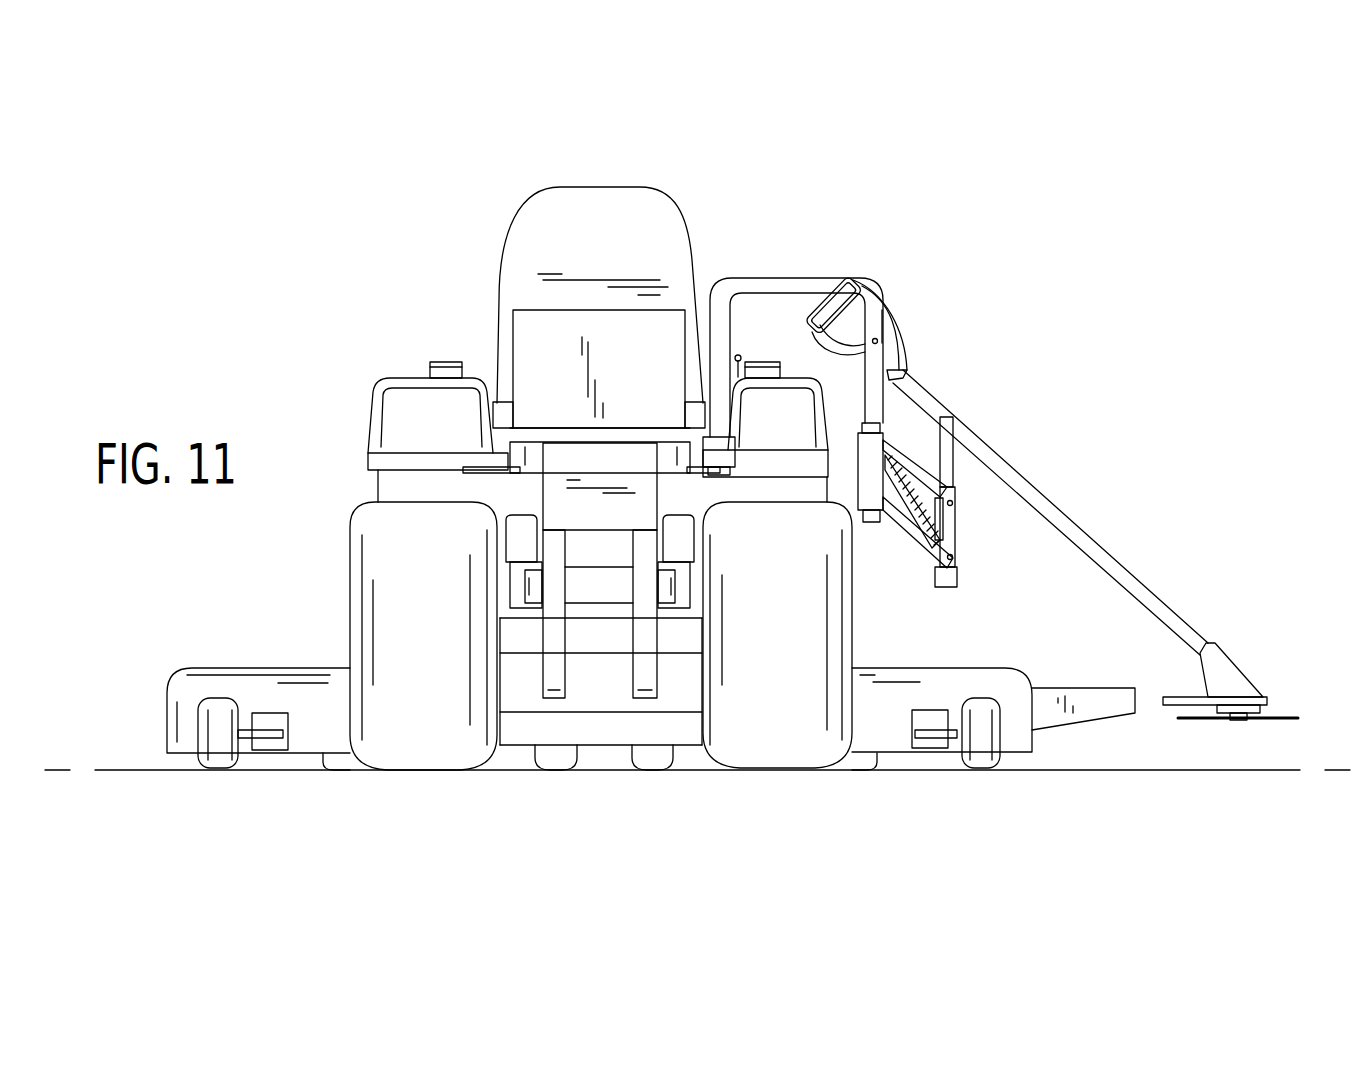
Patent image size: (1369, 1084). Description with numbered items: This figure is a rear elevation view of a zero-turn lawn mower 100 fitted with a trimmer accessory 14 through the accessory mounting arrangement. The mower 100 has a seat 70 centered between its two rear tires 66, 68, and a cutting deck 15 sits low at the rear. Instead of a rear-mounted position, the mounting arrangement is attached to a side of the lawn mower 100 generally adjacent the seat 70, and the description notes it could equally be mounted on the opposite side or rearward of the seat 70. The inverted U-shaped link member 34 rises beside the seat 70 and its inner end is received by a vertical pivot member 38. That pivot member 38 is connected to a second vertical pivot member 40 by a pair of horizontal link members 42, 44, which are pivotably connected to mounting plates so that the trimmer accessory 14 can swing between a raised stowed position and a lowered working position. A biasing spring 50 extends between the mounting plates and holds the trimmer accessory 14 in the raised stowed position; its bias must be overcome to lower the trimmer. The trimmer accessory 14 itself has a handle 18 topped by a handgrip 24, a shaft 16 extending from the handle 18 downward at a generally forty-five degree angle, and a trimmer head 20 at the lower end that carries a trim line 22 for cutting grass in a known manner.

The zero-turn lawn mower 100 is at (378, 250).
The seat 70 is at (588, 203).
The rear tire 66 is at (418, 752).
The rear tire 68 is at (780, 752).
The cutting deck 15 is at (970, 677).
The inverted U-shaped link member 34 is at (773, 268).
The handgrip 24 is at (817, 310).
The handle 18 is at (890, 350).
The vertical pivot member 38 is at (877, 450).
The horizontal link member 42 is at (923, 477).
The horizontal link member 44 is at (917, 540).
The biasing spring 50 is at (943, 517).
The vertical pivot member 40 is at (960, 540).
The trimmer accessory 14 is at (1095, 569).
The shaft 16 is at (1093, 547).
The trimmer head 20 is at (1232, 672).
The trim line 22 is at (1215, 722).